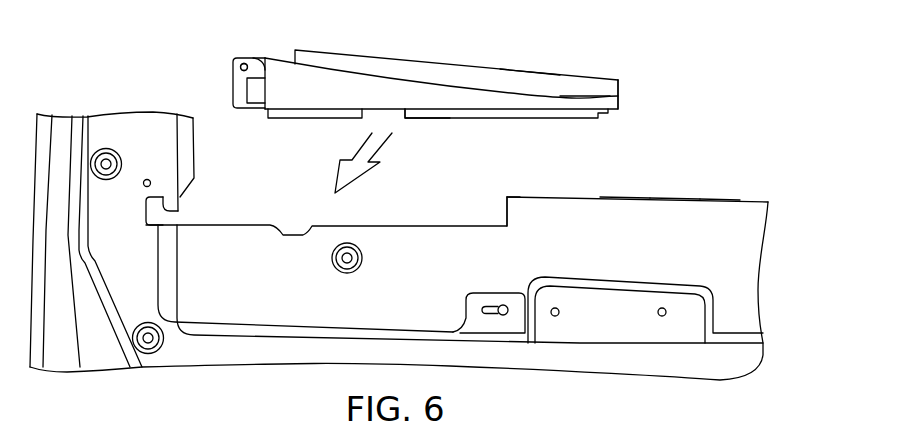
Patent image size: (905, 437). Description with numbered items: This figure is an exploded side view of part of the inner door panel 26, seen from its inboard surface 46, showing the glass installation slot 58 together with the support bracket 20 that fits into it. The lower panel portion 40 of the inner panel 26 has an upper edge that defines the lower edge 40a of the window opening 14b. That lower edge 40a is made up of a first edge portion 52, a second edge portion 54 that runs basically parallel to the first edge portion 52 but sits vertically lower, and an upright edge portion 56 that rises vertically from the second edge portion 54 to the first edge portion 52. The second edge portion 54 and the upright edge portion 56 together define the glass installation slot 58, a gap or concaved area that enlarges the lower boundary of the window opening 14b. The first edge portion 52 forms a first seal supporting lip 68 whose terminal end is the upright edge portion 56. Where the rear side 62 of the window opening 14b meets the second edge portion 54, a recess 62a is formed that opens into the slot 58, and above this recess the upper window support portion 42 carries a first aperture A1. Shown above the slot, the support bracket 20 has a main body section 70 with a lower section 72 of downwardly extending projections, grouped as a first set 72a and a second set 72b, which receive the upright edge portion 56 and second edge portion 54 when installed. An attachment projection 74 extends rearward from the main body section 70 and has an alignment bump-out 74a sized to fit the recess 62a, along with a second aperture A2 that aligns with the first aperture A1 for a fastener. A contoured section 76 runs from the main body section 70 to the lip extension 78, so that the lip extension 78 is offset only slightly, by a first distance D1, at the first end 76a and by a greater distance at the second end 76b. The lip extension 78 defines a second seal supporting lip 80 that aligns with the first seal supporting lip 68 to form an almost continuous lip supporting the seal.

The window opening 14b is at (560, 196).
The support bracket 20 is at (443, 61).
The inner door panel 26 is at (712, 190).
The lower panel portion 40 is at (725, 257).
The lower edge 40a is at (737, 198).
The upper window support portion 42 is at (107, 132).
The inboard surface 46 is at (248, 300).
The first edge portion 52 is at (625, 197).
The second edge portion 54 is at (430, 225).
The upright edge portion 56 is at (505, 212).
The glass installation slot 58 is at (240, 225).
The rear side 62 is at (194, 150).
The recess 62a is at (176, 209).
The first seal supporting lip 68 is at (670, 197).
The main body section 70 is at (308, 85).
The lower section 72 is at (443, 116).
The first set of parallel projections 72a is at (512, 116).
The second set of parallel projections 72b is at (302, 118).
The attachment projection 74 is at (235, 78).
The alignment bump-out 74a is at (255, 93).
The contoured section 76 is at (376, 73).
The first end 76a is at (620, 84).
The second end 76b is at (255, 58).
The lip extension 78 is at (572, 88).
The second seal supporting lip 80 is at (530, 78).
The first aperture A1 is at (148, 179).
The second aperture A2 is at (241, 64).
The first distance D1 is at (775, 8).